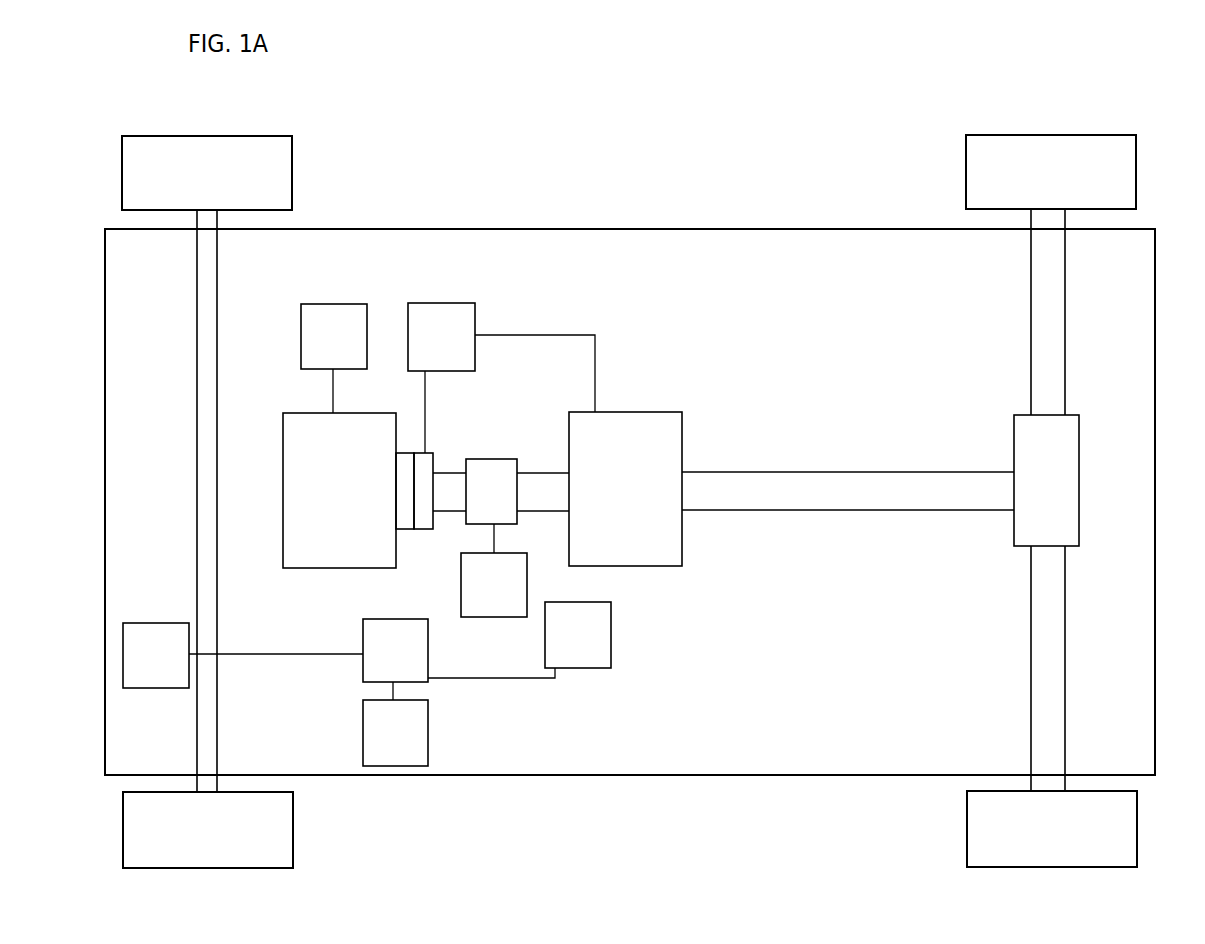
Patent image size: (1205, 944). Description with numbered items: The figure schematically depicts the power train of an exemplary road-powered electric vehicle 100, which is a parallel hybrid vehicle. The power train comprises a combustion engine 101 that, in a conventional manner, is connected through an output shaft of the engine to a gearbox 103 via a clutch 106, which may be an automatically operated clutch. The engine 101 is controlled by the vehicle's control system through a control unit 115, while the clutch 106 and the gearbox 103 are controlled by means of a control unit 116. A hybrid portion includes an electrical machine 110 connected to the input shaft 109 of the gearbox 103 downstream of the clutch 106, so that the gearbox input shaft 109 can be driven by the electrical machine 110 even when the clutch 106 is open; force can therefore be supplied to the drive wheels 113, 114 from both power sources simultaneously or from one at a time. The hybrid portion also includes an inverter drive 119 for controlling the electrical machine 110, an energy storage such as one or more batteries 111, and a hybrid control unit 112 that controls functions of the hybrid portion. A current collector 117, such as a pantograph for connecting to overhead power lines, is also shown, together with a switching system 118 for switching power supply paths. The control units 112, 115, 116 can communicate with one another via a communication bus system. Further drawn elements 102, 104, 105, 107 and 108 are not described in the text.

The road-powered electric vehicle 100 is at (437, 101).
The combustion engine 101 is at (300, 548).
The clutch 102 is at (403, 527).
The gearbox 103 is at (633, 440).
The rear axle half shaft 104 is at (1060, 335).
The rear axle half shaft 105 is at (1058, 673).
The clutch 106 is at (422, 525).
The drive shaft 107 is at (948, 487).
The differential 108 is at (1073, 480).
The input shaft 109 is at (535, 500).
The electrical machine 110 is at (500, 485).
The batteries 111 is at (370, 703).
The hybrid control unit 112 is at (584, 660).
The drive wheel 113 is at (1125, 200).
The drive wheel 114 is at (1130, 843).
The control unit 115 is at (337, 323).
The control unit 116 is at (468, 332).
The current collector 117 is at (148, 681).
The switching system 118 is at (408, 668).
The inverter drive 119 is at (512, 595).